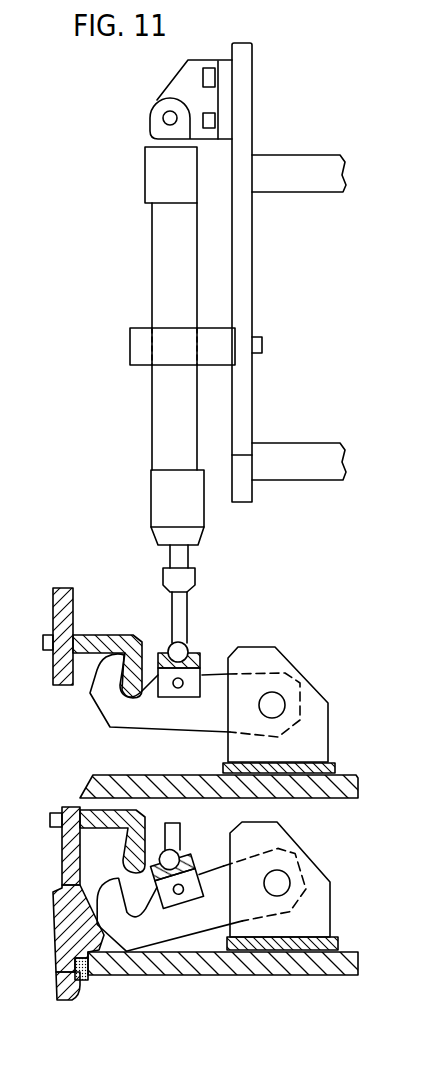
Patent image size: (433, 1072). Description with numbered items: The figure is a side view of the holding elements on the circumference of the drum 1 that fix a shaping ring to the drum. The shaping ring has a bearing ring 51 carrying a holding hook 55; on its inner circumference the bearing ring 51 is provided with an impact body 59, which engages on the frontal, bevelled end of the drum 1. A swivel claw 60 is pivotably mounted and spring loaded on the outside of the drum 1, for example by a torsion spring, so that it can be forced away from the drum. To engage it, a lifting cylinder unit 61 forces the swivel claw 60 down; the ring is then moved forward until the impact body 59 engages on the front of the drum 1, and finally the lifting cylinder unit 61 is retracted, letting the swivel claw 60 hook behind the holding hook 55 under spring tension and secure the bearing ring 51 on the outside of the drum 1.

The drum 1 is at (108, 782).
The bearing ring 51 is at (62, 667).
The holding hook 55 is at (112, 640).
The impact body 59 is at (80, 935).
The swivel claw 60 is at (103, 702).
The lifting cylinder unit 61 is at (152, 242).